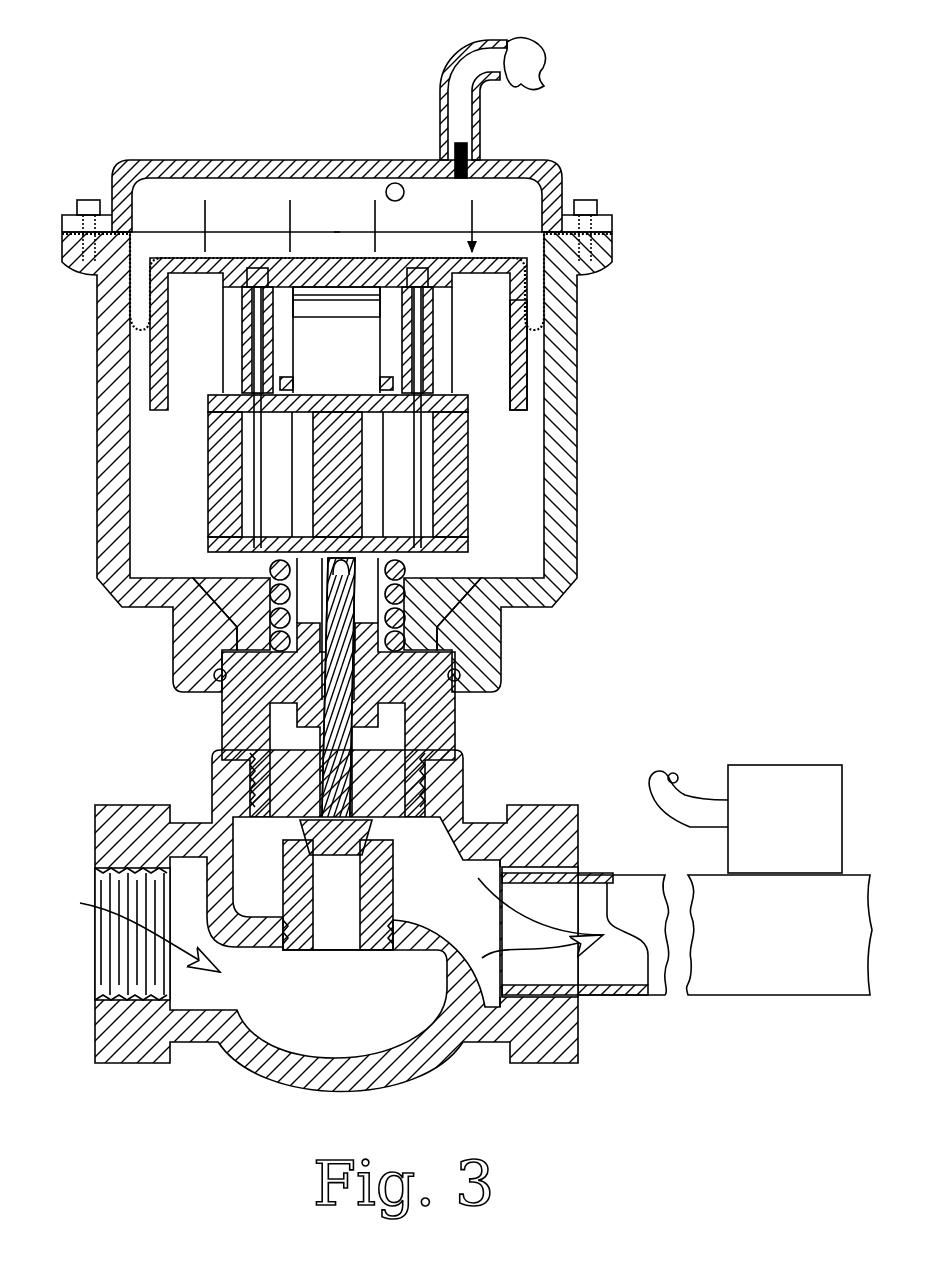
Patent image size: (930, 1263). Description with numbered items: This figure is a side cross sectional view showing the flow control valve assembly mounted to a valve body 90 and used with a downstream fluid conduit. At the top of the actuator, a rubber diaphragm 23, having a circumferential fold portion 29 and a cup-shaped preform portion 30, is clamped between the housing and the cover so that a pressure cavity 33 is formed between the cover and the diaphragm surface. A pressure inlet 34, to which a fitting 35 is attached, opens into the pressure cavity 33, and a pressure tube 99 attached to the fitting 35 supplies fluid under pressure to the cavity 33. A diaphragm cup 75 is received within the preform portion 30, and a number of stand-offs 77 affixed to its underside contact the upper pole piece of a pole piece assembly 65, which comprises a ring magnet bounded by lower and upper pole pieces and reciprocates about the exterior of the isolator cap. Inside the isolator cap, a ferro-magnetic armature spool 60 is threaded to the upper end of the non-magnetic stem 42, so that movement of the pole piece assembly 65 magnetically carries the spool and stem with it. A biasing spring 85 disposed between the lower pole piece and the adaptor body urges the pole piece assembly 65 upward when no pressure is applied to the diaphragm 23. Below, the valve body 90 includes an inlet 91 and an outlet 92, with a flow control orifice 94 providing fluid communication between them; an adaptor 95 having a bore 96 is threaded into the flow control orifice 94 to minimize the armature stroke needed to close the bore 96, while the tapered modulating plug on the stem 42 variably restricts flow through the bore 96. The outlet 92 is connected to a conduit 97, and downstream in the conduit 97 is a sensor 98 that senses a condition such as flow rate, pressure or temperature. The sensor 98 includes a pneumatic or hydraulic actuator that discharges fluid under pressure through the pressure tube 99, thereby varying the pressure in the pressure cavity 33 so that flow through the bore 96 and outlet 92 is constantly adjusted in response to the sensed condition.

The diaphragm 23 is at (490, 258).
The circumferential fold portion 29 is at (162, 325).
The preform portion 30 is at (180, 258).
The pressure cavity 33 is at (337, 205).
The pressure inlet 34 is at (455, 186).
The fitting 35 is at (440, 142).
The stem 42 is at (352, 740).
The armature spool 60 is at (330, 478).
The pole piece assembly 65 is at (465, 452).
The diaphragm cup 75 is at (512, 365).
The stand-offs 77 is at (433, 330).
The biasing spring 85 is at (400, 588).
The valve body 90 is at (545, 778).
The inlet 91 is at (108, 900).
The outlet 92 is at (575, 900).
The flow control orifice 94 is at (368, 952).
The adaptor 95 is at (303, 952).
The bore 96 is at (283, 860).
The conduit 97 is at (690, 990).
The sensor 98 is at (748, 775).
The pressure tube 99 is at (520, 65).